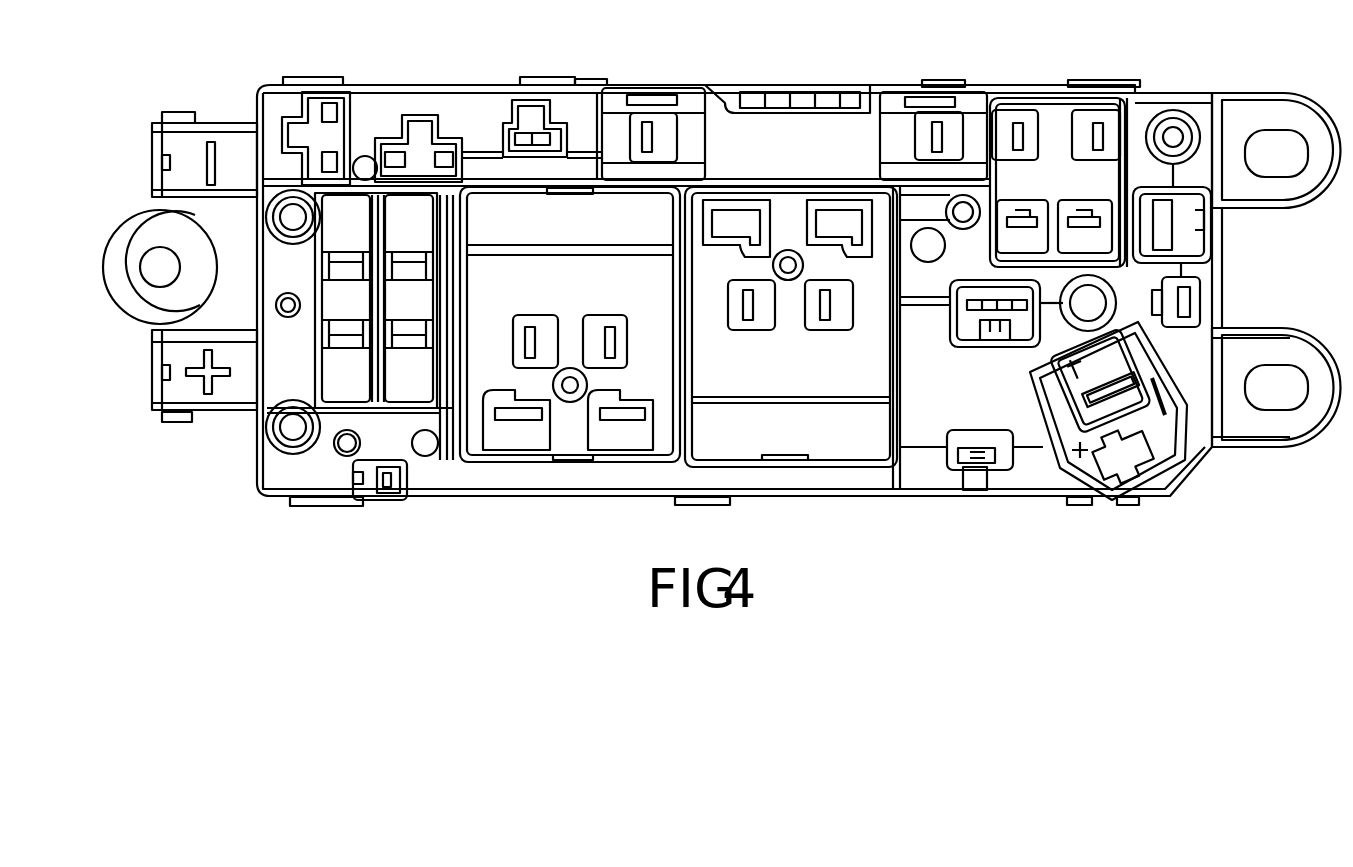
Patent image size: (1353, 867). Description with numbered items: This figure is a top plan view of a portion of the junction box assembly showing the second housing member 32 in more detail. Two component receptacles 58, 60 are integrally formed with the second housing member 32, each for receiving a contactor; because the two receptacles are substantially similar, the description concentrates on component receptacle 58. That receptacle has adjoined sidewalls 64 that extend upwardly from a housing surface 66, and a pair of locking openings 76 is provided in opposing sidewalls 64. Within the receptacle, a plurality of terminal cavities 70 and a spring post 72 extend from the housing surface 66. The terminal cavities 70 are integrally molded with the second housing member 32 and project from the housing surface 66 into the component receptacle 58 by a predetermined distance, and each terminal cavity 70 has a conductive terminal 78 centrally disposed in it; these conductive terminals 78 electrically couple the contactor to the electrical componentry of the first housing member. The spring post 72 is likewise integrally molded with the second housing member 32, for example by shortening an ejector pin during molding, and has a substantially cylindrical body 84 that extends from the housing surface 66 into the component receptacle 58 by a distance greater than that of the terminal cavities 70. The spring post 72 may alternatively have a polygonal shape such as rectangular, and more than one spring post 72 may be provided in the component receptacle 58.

The second housing member 32 is at (240, 413).
The component receptacle 58 is at (513, 277).
The component receptacle 60 is at (807, 370).
The sidewalls 64 is at (560, 188).
The housing surface 66 is at (585, 296).
The terminal cavities 70 is at (520, 335).
The spring post 72 is at (570, 393).
The locking openings 76 is at (548, 178).
The conductive terminal 78 is at (548, 335).
The cylindrical body 84 is at (587, 383).